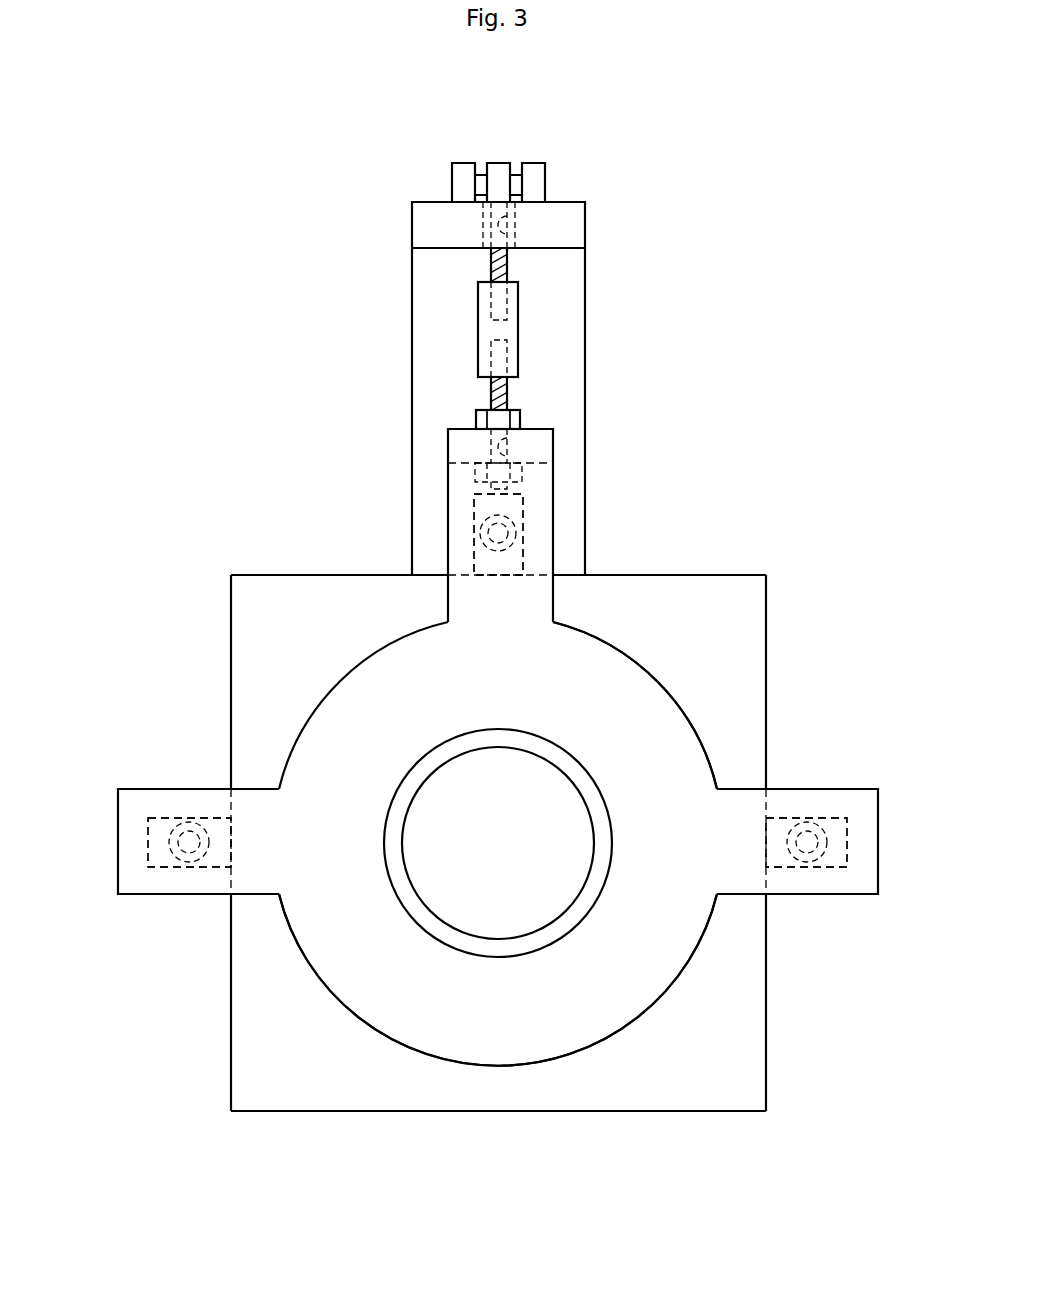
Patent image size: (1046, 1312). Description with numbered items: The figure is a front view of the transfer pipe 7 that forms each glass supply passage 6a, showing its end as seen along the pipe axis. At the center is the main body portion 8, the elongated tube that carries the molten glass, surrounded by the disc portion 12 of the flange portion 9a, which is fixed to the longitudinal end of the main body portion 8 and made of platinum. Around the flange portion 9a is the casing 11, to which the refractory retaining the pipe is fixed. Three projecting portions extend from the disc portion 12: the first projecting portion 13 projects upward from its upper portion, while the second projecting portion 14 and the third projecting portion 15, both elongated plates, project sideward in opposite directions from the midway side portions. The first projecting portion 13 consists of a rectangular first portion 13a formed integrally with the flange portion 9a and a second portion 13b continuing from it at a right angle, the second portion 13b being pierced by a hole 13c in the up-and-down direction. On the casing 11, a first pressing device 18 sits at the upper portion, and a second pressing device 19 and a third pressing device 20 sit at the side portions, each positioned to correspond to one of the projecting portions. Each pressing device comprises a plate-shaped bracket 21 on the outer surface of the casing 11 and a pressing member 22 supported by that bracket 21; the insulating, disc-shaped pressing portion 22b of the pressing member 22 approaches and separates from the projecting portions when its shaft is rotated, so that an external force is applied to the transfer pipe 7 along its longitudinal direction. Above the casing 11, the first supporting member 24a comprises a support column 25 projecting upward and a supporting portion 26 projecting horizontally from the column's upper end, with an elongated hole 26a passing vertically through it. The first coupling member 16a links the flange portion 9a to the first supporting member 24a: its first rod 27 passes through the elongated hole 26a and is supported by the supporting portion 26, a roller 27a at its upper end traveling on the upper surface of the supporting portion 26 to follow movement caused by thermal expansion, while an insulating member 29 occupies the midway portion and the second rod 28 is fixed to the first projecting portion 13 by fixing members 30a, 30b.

The glass supply passage 6a is at (751, 158).
The transfer pipe 7 is at (702, 695).
The main body portion 8 is at (517, 945).
The flange portion 9a is at (411, 1062).
The casing 11 is at (741, 575).
The disc portion 12 is at (642, 1020).
The first projecting portion 13 is at (655, 430).
The first portion 13a is at (553, 490).
The second portion 13b is at (553, 445).
The hole 13c is at (520, 418).
The second projecting portion 14 is at (118, 841).
The third projecting portion 15 is at (878, 841).
The first coupling member 16a is at (645, 270).
The first pressing device 18 is at (536, 527).
The second pressing device 19 is at (188, 805).
The third pressing device 20 is at (807, 805).
The bracket 21 is at (474, 557).
The pressing member 22 is at (523, 553).
The pressing portion 22b is at (498, 688).
The first supporting member 24a is at (343, 230).
The support column 25 is at (412, 310).
The supporting portion 26 is at (412, 232).
The elongated hole 26a is at (512, 236).
The first rod 27 is at (507, 268).
The roller 27a is at (535, 162).
The second rod 28 is at (507, 395).
The insulating member 29 is at (518, 325).
The fixing member 30a is at (476, 422).
The fixing member 30b is at (475, 478).